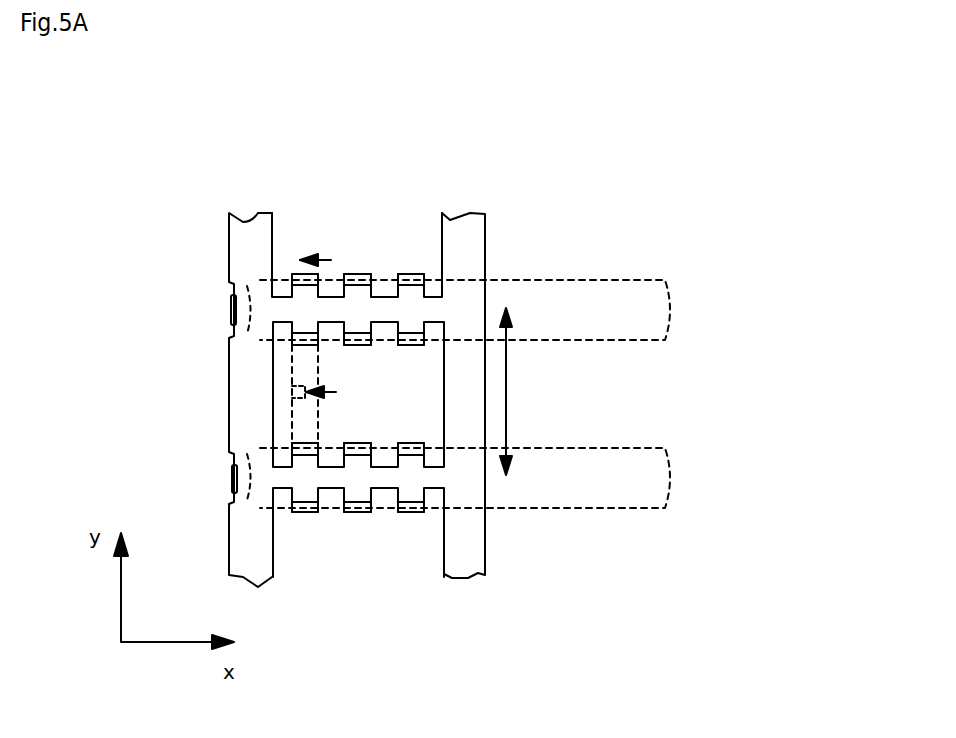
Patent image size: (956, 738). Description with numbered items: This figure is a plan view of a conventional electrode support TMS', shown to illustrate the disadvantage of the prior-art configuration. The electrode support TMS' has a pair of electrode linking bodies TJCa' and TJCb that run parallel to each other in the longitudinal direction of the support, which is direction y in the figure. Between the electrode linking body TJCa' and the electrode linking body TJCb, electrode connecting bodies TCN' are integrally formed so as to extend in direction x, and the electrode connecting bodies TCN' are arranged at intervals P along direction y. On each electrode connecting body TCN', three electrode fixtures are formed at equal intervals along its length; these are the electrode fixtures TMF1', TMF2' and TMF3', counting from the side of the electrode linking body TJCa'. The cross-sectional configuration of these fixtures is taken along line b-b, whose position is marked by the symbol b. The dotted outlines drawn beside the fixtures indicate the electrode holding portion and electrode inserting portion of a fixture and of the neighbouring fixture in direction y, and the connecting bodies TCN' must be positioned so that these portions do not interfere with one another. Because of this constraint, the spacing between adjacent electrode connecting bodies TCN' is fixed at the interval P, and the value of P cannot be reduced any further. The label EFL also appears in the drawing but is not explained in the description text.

The electrode support TMS' is at (344, 342).
The first electrode fixture TMF1' is at (306, 399).
The second electrode fixture TMF2' is at (360, 330).
The third electrode fixture TMF3' is at (419, 399).
The electrode connecting body TCN' is at (408, 378).
The electrode linking body TJCa' is at (170, 400).
The electrode linking body TJCb is at (460, 307).
The electric field line region EFL is at (592, 508).
The interval P is at (518, 391).
The line b- b is at (326, 344).